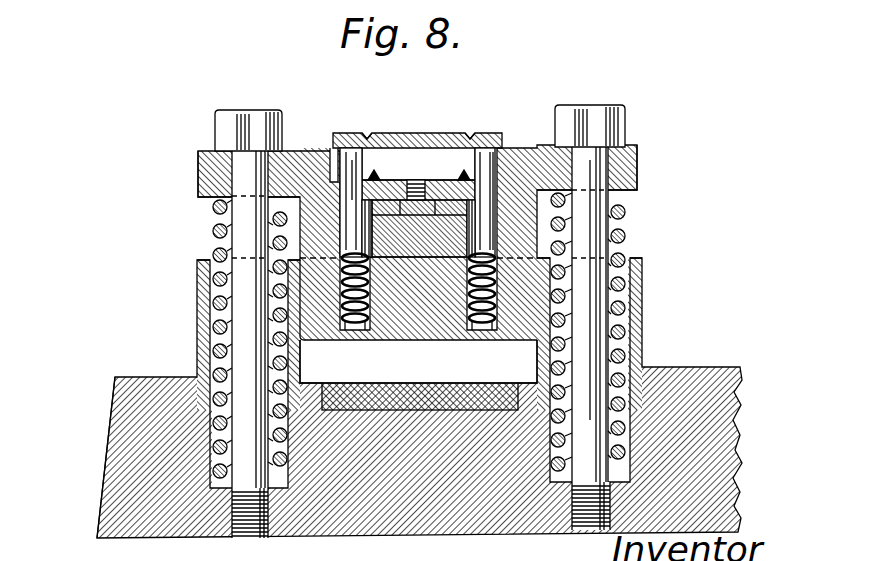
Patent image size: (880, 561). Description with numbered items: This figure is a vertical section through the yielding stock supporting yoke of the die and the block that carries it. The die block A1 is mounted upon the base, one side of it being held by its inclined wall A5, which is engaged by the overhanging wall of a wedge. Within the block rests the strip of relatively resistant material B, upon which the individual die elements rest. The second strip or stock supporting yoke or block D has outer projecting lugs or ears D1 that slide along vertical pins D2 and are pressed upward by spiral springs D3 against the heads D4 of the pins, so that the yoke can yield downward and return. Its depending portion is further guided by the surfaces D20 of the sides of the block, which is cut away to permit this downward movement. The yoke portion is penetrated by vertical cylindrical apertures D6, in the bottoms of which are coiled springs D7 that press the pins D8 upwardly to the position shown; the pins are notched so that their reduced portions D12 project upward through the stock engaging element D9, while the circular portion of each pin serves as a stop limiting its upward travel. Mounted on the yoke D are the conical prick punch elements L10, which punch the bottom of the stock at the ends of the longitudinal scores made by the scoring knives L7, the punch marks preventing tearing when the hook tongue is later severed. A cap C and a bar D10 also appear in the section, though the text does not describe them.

The die block A1 is at (160, 390).
The inclined wall A5 is at (105, 422).
The strip of relatively resistant material B is at (413, 393).
The cap C is at (448, 133).
The stock supporting yoke D is at (520, 192).
The outer projecting lugs D1 is at (198, 168).
The vertical pins D2 is at (232, 213).
The spiral springs D3 is at (217, 253).
The heads D4 is at (220, 124).
The vertical cylindrical apertures D6 is at (468, 290).
The coiled springs D7 is at (362, 322).
The pins D8 is at (473, 236).
The stock engaging element D9 is at (433, 180).
The bar D10 is at (418, 190).
The reduced portions D12 is at (343, 160).
The guiding surfaces D20 is at (302, 366).
The longitudinal scoring knives L7 is at (365, 133).
The conical prick punch elements L10 is at (460, 177).